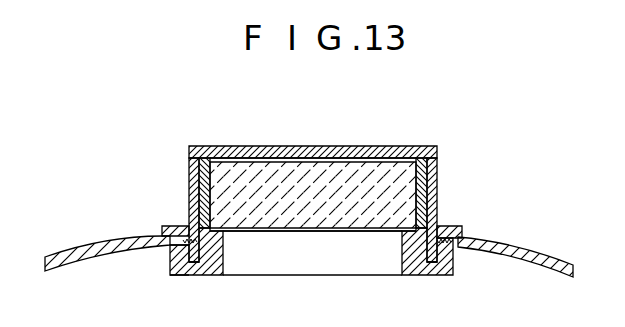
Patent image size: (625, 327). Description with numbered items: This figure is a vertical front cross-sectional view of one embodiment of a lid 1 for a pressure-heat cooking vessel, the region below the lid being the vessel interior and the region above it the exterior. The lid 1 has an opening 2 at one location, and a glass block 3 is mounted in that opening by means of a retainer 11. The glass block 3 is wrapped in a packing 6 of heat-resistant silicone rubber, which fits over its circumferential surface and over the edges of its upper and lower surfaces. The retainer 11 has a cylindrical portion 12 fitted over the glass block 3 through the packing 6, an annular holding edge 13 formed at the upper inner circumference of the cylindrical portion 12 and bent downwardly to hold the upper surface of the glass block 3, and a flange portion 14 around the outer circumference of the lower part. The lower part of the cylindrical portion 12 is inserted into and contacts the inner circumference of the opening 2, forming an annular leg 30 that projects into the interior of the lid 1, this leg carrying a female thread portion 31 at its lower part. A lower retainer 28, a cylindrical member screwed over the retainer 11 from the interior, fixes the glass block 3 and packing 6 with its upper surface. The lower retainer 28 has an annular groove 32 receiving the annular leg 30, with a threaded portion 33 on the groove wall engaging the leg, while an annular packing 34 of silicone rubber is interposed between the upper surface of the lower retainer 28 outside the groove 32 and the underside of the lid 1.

The lid 1 is at (556, 262).
The opening 2 is at (455, 228).
The glass block 3 is at (370, 168).
The packing 6 is at (205, 185).
The retainer 11 is at (428, 165).
The cylindrical portion 12 is at (437, 195).
The annular holding edge 13 is at (190, 146).
The flange portion 14 is at (172, 227).
The lower retainer 28 is at (225, 263).
The annular leg 30 is at (202, 263).
The female thread portion 31 is at (435, 277).
The annular groove 32 is at (397, 248).
The threaded portion 33 is at (188, 264).
The annular packing 34 is at (184, 246).